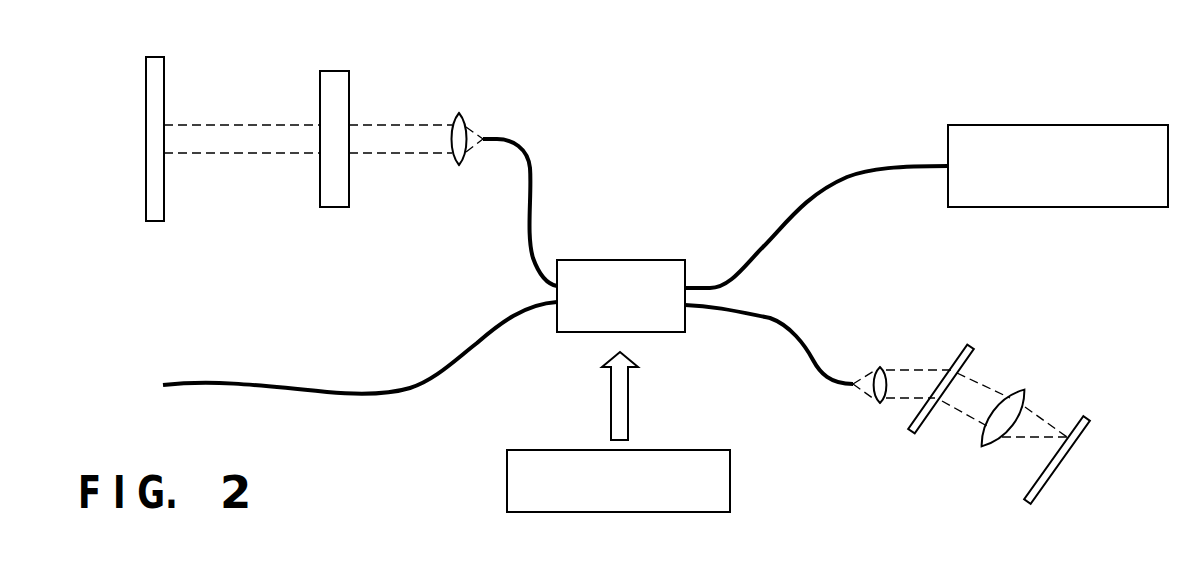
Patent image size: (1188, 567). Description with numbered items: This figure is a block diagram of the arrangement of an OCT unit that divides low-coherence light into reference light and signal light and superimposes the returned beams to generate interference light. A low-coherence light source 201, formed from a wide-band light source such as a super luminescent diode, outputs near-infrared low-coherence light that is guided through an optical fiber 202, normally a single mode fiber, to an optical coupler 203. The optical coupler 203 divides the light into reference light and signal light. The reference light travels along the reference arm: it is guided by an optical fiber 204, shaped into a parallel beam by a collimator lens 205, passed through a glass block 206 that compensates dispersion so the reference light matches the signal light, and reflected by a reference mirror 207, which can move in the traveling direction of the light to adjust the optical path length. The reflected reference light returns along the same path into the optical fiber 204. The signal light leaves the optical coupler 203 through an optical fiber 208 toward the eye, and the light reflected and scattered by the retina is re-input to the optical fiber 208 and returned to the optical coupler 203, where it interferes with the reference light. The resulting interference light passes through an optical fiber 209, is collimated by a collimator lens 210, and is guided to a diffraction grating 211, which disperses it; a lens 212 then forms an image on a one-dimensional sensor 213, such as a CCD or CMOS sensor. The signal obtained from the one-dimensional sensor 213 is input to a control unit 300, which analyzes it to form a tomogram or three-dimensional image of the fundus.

The low-coherence light source 201 is at (1080, 125).
The optical fiber 202 is at (860, 172).
The optical coupler 203 is at (662, 260).
The optical fiber 204 is at (533, 158).
The collimator lens 205 is at (459, 112).
The glass block 206 is at (334, 70).
The reference mirror 207 is at (151, 57).
The optical fiber 208 is at (382, 392).
The optical fiber 209 is at (723, 312).
The collimator lens 210 is at (882, 367).
The diffraction grating 211 is at (913, 437).
The lens 212 is at (983, 448).
The one-dimensional sensor 213 is at (1090, 418).
The control unit 300 is at (732, 480).